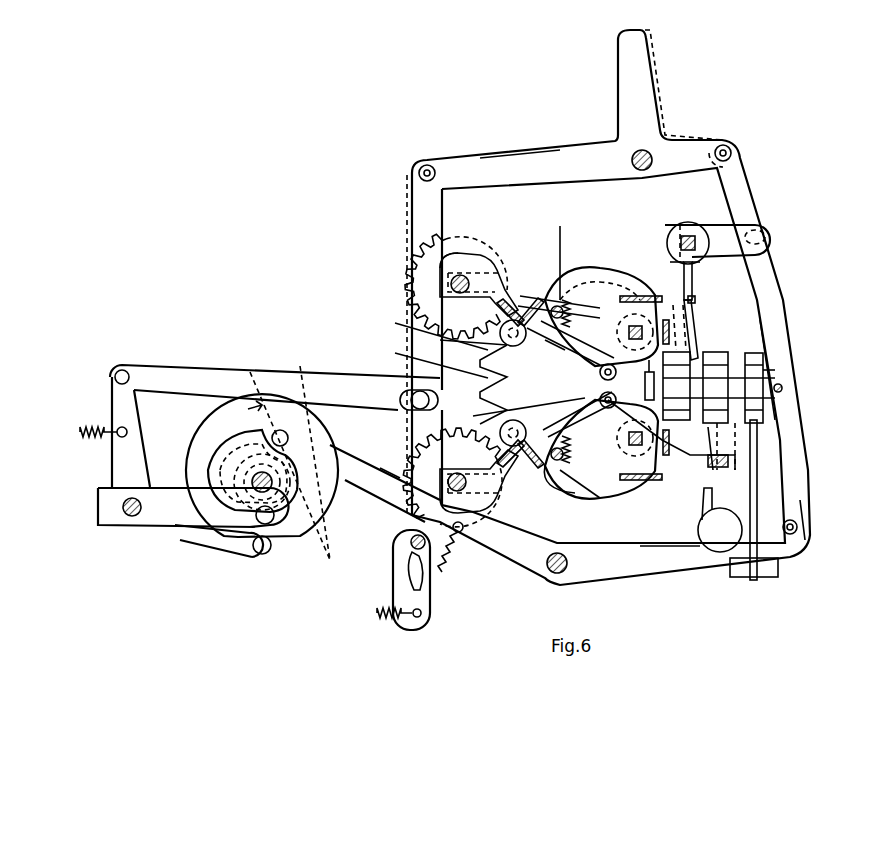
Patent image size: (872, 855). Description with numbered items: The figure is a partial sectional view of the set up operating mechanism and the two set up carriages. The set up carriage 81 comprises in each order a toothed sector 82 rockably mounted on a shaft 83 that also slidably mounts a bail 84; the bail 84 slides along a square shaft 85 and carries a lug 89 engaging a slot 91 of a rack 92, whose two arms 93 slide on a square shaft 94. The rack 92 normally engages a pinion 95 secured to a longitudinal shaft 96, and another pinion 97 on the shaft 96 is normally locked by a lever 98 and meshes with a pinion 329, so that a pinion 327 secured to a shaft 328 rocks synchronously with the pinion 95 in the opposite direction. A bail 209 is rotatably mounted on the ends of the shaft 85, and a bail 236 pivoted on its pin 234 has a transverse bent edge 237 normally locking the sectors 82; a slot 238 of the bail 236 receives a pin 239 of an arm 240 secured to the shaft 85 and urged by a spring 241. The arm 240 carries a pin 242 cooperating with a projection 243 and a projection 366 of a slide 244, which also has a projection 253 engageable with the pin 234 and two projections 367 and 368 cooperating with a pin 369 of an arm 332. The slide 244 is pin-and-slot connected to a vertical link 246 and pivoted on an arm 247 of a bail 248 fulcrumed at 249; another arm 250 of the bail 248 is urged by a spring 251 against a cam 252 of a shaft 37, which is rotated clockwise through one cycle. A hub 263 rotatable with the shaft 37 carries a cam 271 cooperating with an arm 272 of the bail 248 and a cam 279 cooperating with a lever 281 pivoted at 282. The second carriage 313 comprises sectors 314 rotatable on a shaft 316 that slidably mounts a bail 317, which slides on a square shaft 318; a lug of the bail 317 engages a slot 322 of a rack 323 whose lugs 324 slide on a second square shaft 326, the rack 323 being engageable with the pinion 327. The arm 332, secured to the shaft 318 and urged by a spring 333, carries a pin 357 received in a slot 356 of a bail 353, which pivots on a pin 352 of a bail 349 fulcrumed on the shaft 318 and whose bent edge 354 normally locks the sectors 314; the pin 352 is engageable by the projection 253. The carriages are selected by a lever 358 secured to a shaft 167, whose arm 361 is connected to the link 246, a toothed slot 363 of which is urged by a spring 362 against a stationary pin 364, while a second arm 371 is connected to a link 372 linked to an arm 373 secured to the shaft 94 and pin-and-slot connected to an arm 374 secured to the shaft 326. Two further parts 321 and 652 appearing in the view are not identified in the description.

The vertical link 246 is at (412, 196).
The arm 361 is at (526, 158).
The lever 358 is at (618, 100).
The second arm 371 is at (712, 148).
The link 372 is at (780, 272).
The arm 373 is at (798, 542).
The lever 98 is at (808, 508).
The pivot 282 is at (566, 570).
The lever 281 is at (655, 566).
The shaft 167 is at (641, 170).
The second set up carriage 313 is at (459, 240).
The sectors 314 is at (412, 292).
The shaft 316 is at (450, 280).
The bent edge 354 is at (505, 288).
The slot 356 is at (545, 298).
The arm 332 is at (520, 300).
The pin 357 is at (561, 256).
The spring 333 is at (566, 300).
The bail 353 is at (564, 312).
The pin 369 is at (514, 346).
The pin 352 is at (620, 296).
The pivot pin 652 is at (635, 332).
The bail 317 is at (633, 296).
The square shaft 318 is at (670, 300).
The lugs 324 is at (667, 244).
The second square shaft 326 is at (688, 236).
The arm 374 is at (712, 222).
The slot 322 is at (698, 280).
The pin 321 is at (698, 299).
The rack 323 is at (697, 320).
The bail 349 is at (690, 330).
The longitudinal shaft 96 is at (647, 377).
The pinion 327 is at (665, 405).
The pinion 95 is at (725, 352).
The pinion 97 is at (765, 410).
The pinion 329 is at (765, 368).
The shaft 328 is at (782, 388).
The bail 209 is at (683, 441).
The rack 92 is at (740, 436).
The lug 89 is at (740, 461).
The square shaft 94 is at (720, 545).
The arms 93 is at (698, 530).
The slot 91 is at (728, 467).
The square shaft 85 is at (670, 460).
The bail 236 is at (640, 460).
The bail 84 is at (660, 482).
The spring 241 is at (595, 490).
The slot 238 is at (558, 492).
The pin 239 is at (580, 460).
The transverse bent edge 237 is at (516, 466).
The pin 234 is at (598, 372).
The projection 253 is at (600, 398).
The arm 240 is at (540, 426).
The pin 242 is at (500, 430).
The projection 243 is at (478, 430).
The projection 368 is at (440, 340).
The projection 367 is at (410, 352).
The projection 366 is at (490, 500).
The toothed sector 82 is at (446, 478).
The set up carriage 81 is at (477, 527).
The slide 244 is at (260, 376).
The cam 279 is at (290, 455).
The arm 247 is at (112, 408).
The spring 251 is at (92, 438).
The bail 248 is at (98, 512).
The fulcrum 249 is at (130, 518).
The arm 272 is at (218, 545).
The arm 250 is at (240, 520).
The cam 271 is at (212, 422).
The cam 252 is at (220, 462).
The shaft 37 is at (268, 490).
The hub 263 is at (276, 490).
The shaft 83 is at (372, 490).
The stationary pin 364 is at (400, 562).
The toothed slot 363 is at (400, 586).
The spring 362 is at (388, 618).